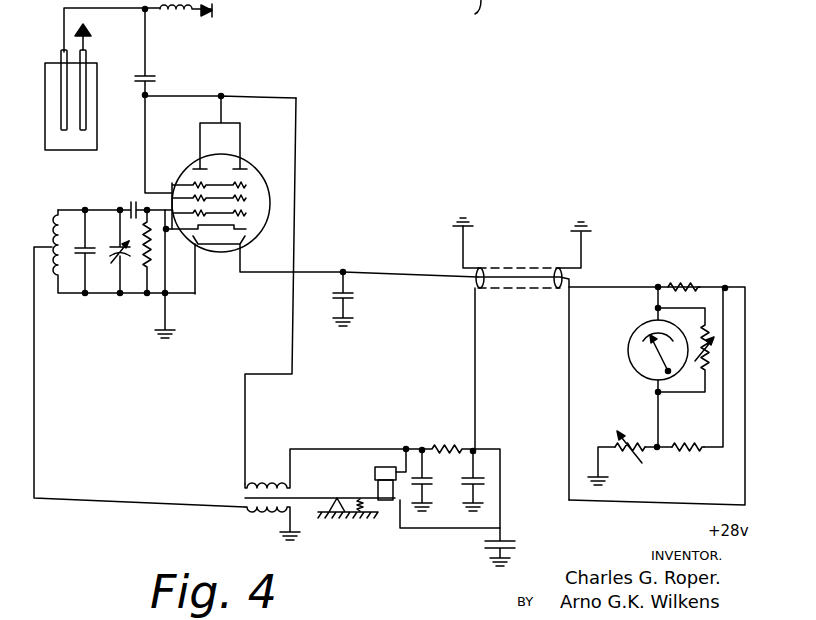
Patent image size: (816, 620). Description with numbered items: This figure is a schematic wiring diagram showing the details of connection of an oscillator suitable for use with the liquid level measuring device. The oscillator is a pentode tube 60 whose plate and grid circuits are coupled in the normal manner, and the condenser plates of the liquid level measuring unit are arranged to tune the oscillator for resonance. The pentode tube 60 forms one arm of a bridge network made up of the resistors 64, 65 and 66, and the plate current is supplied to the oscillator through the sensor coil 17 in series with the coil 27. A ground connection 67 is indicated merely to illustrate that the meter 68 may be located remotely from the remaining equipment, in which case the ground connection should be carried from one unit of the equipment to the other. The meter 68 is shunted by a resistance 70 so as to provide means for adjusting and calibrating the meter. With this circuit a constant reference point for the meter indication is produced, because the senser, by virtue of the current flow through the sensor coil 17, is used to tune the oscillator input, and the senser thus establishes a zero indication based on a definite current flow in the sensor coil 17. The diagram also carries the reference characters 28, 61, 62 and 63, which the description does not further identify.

The sensor coil 17 is at (375, 473).
The coil 27 is at (259, 478).
The coil winding 28 is at (248, 509).
The pentode tube 60 is at (284, 150).
The tank circuit 61 is at (95, 208).
The lead 62 is at (97, 498).
The conductor 63 is at (300, 224).
The resistor 64 is at (690, 283).
The resistor 65 is at (701, 457).
The resistor 66 is at (636, 438).
The ground connection 67 is at (576, 245).
The meter 68 is at (640, 350).
The resistance 70 is at (714, 367).